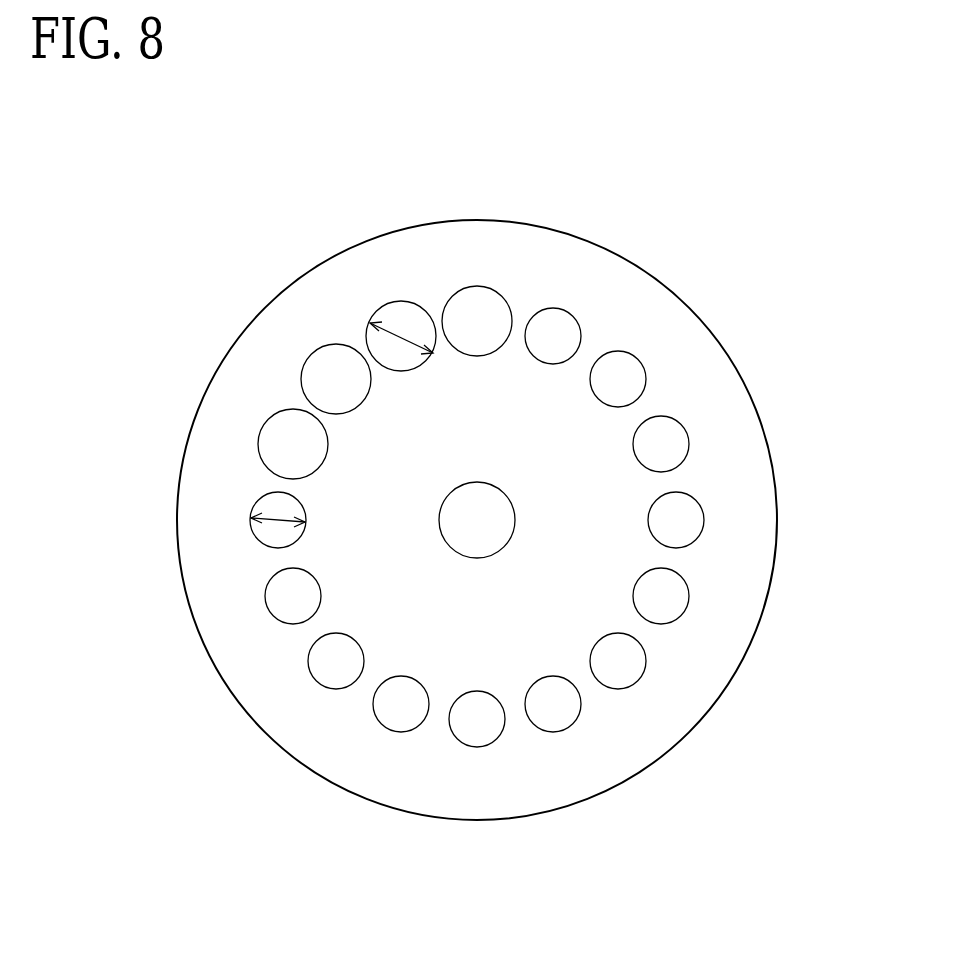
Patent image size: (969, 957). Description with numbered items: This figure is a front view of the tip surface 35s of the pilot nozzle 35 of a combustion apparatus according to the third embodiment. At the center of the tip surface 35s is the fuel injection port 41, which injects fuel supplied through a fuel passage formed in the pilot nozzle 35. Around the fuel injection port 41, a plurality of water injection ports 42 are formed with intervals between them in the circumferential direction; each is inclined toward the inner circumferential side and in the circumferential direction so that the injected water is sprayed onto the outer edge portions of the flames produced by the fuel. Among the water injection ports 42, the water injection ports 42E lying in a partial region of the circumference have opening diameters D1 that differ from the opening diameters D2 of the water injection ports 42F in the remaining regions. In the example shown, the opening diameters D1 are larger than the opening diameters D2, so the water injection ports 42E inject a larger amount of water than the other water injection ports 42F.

The pilot nozzle 35 is at (555, 228).
The tip surface 35s is at (627, 293).
The fuel injection port 41 is at (477, 482).
The water injection ports 42 is at (469, 484).
The water injection ports of the partial region 42E is at (480, 293).
The water injection ports of the remaining regions 42F is at (700, 513).
The opening diameter D1 is at (400, 340).
The opening diameter D2 is at (277, 513).